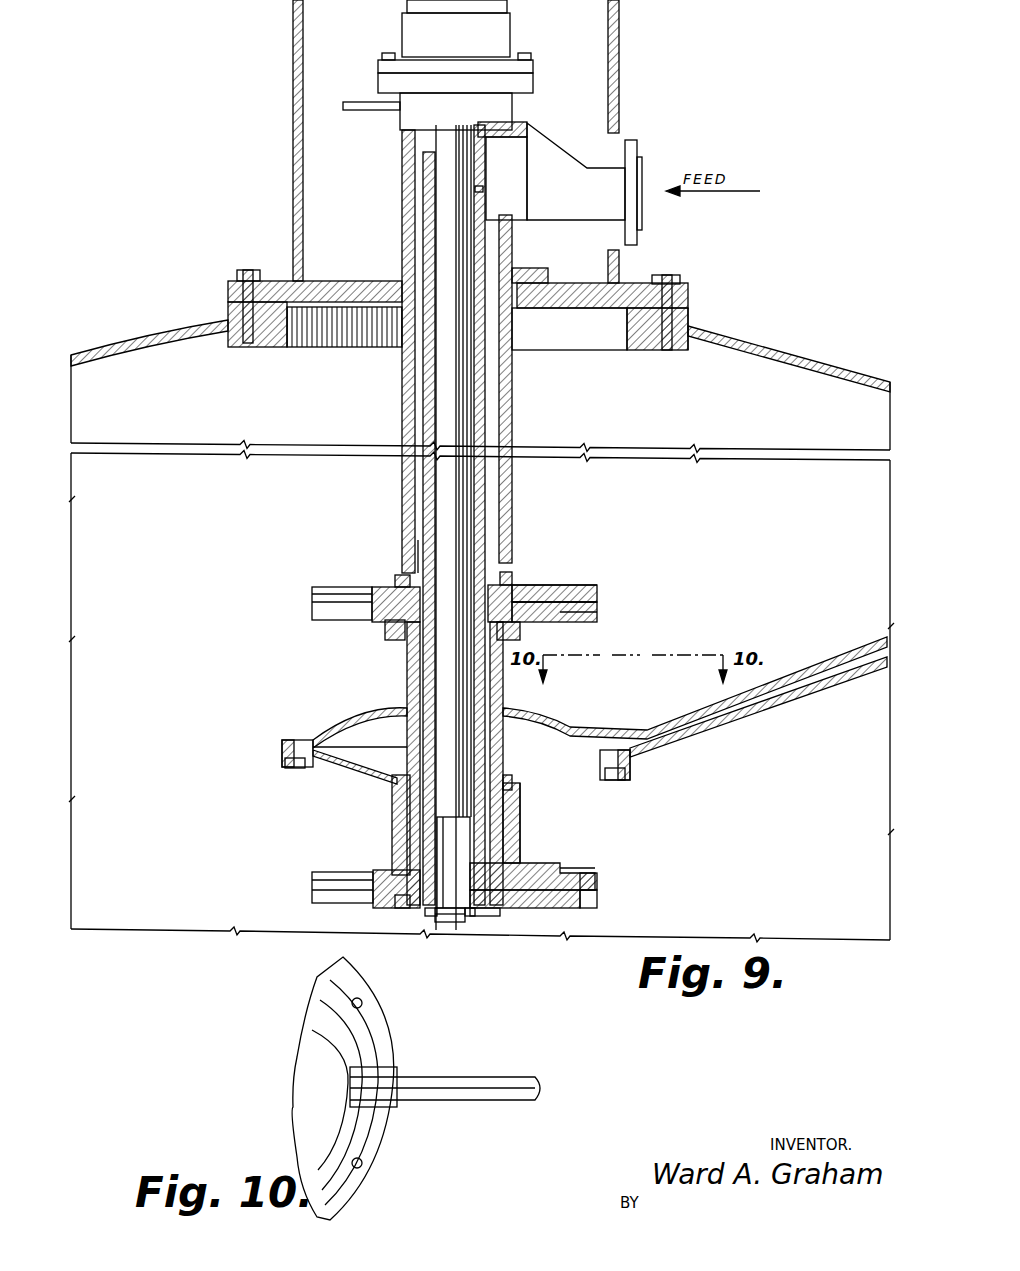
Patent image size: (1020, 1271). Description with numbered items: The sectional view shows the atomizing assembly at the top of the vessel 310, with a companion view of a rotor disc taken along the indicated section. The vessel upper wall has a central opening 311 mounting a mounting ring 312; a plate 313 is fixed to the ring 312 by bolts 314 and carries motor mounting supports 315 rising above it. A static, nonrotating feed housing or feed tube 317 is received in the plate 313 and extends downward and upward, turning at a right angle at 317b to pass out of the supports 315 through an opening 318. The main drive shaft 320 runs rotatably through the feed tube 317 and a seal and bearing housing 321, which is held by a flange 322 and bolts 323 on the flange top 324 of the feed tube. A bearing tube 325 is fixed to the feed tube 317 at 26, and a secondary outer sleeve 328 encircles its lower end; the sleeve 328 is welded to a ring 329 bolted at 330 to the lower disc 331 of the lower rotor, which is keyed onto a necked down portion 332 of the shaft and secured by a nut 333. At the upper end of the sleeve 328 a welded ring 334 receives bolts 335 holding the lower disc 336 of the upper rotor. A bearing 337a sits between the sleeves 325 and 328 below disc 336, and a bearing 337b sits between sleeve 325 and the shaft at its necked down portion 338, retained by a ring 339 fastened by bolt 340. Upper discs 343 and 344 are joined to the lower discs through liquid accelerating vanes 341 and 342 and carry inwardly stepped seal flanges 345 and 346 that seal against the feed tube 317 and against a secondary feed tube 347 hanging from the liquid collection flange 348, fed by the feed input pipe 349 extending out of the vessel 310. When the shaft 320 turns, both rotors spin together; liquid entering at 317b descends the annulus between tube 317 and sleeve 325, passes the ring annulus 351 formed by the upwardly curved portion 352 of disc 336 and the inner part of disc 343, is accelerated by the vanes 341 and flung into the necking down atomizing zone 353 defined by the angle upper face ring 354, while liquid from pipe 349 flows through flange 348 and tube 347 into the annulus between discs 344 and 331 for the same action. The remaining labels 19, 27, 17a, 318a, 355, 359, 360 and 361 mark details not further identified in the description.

The motor mounting supports 315 is at (622, 47).
The seal and bearing housing 321 is at (415, 37).
The bolts 323 is at (526, 55).
The flange 322 is at (534, 66).
The flange top 324 is at (520, 88).
The shaft 19 is at (476, 124).
The main drive shaft 320 is at (412, 142).
The bearing tube 325 is at (430, 405).
The feed housing 317 is at (512, 413).
The right-angle turn of feed housing 317b is at (540, 150).
The attachment point of bearing tube 26 is at (506, 178).
The port 27 is at (486, 190).
The opening 318 is at (612, 167).
The mounting plate 313 is at (598, 305).
The mounting ring 312 is at (270, 342).
The recess 318a is at (569, 329).
The tube foot 17a is at (525, 270).
The bolts 314 is at (248, 270).
The opening 311 is at (690, 345).
The vessel 310 is at (190, 330).
The upwardly curved portion 352 is at (420, 545).
The ring annulus 351 is at (398, 578).
The lower disc of upper atomizing rotor 336 is at (375, 620).
The liquid accelerating vanes 341 is at (375, 590).
The bolts 335 is at (390, 640).
The ring 334 is at (535, 625).
The seal flange 345 is at (515, 575).
The upper disc of upper rotor 343 is at (585, 585).
The atomizing zone 353 is at (600, 597).
The angle upper face ring 354 is at (600, 612).
The bearing 337a is at (530, 677).
The secondary outer sleeve 328 is at (505, 698).
The liquid collection flange 348 is at (575, 734).
The support 355 is at (395, 785).
The feed input pipe 349 is at (662, 758).
The bearing 337b is at (508, 783).
The necked down portion 338 is at (393, 809).
The ring 339 is at (450, 835).
The seal flange 346 is at (386, 870).
The secondary feed tube 347 is at (520, 792).
The bolt 340 is at (522, 822).
The upper disc of lower rotor 344 is at (525, 862).
The liquid accelerating vanes 342 is at (560, 875).
The ring 360 is at (590, 880).
The ring 361 is at (597, 895).
The lower disc of lower atomizing rotor 331 is at (585, 905).
The spacer 359 is at (400, 900).
The ring 329 is at (490, 908).
The bolts 330 is at (430, 918).
The nut 333 is at (448, 923).
The necked down portion 332 is at (470, 918).